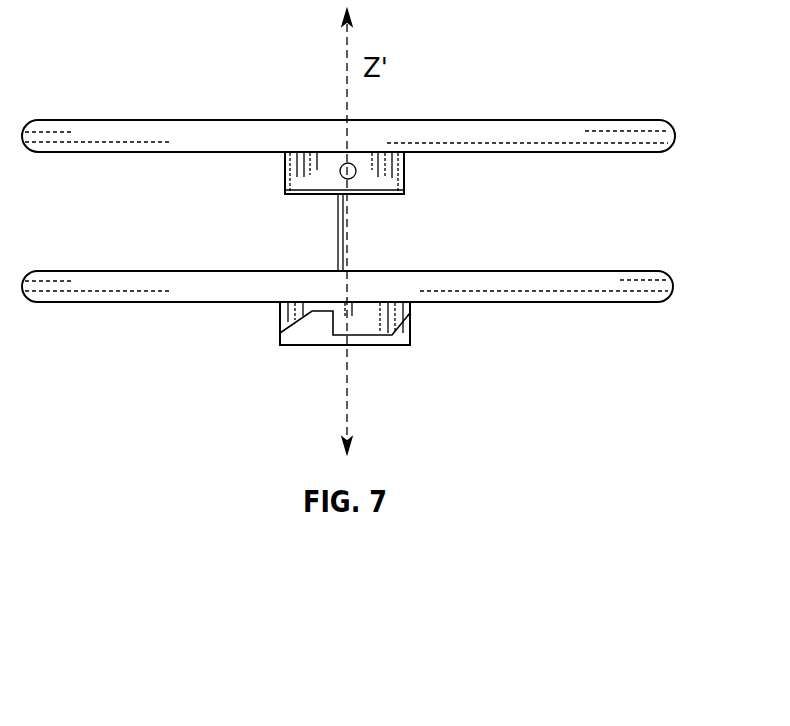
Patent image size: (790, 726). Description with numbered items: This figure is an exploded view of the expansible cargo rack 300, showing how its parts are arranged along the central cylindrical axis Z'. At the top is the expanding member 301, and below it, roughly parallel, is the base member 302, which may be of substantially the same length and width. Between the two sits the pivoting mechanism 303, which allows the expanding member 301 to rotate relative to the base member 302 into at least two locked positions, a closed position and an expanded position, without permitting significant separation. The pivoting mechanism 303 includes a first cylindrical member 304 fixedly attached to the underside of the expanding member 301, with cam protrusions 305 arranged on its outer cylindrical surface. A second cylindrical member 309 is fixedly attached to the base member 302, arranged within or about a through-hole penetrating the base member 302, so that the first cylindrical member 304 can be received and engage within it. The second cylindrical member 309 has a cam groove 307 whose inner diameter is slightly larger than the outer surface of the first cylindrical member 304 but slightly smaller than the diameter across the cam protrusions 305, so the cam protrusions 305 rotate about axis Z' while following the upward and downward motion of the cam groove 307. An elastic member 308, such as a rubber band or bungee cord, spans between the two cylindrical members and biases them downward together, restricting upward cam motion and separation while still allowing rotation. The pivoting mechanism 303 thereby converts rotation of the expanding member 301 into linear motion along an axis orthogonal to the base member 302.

The cargo rack 300 is at (634, 50).
The expanding member 301 is at (605, 120).
The base member 302 is at (605, 302).
The pivoting mechanism 303 is at (572, 221).
The first cylindrical member 304 is at (405, 172).
The cam protrusions 305 is at (340, 172).
The cam groove 307 is at (292, 326).
The elastic member 308 is at (338, 248).
The second cylindrical member 309 is at (410, 322).